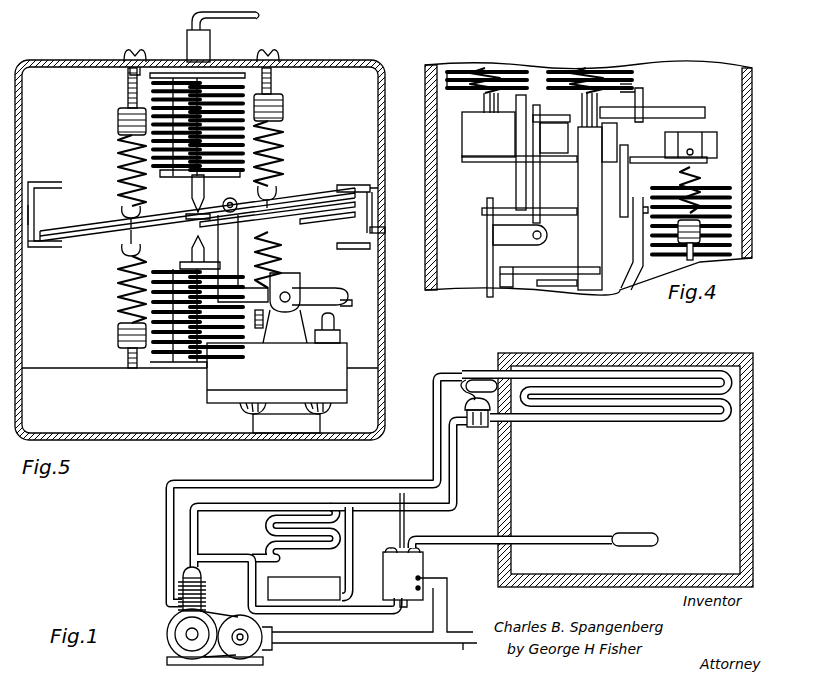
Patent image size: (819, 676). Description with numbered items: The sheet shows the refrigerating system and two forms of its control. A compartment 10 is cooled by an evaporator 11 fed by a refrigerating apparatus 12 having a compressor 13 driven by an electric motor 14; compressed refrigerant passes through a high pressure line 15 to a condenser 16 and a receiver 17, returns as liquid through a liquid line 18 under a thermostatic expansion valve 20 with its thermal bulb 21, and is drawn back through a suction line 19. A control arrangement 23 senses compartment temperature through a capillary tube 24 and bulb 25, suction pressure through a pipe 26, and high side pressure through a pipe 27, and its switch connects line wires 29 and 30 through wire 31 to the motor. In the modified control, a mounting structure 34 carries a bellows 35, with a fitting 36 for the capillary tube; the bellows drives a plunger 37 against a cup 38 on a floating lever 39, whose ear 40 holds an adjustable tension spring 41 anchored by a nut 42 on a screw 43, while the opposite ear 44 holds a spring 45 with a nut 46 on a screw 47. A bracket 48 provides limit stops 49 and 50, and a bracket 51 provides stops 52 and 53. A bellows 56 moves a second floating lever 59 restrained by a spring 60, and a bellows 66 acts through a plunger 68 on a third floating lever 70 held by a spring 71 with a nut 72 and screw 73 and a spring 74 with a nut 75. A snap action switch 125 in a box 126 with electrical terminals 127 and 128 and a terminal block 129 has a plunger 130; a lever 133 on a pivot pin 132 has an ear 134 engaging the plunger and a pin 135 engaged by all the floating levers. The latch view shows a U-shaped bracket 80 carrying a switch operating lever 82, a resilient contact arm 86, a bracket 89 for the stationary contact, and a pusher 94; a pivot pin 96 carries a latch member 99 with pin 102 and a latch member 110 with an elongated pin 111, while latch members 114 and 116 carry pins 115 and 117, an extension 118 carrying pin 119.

In FIG. 1, the compartment 10 is at (590, 357).
In FIG. 1, the evaporator 11 is at (612, 420).
In FIG. 1, the refrigerating apparatus 12 is at (134, 581).
In FIG. 1, the compressor 13 is at (201, 578).
In FIG. 1, the electric motor 14 is at (242, 615).
In FIG. 1, the high pressure line 15 is at (198, 532).
In FIG. 1, the condenser 16 is at (271, 527).
In FIG. 1, the receiver 17 is at (302, 592).
In FIG. 1, the liquid line 18 is at (457, 491).
In FIG. 1, the suction line 19 is at (432, 452).
In FIG. 1, the thermostatic expansion valve 20 is at (478, 427).
In FIG. 1, the thermal bulb 21 is at (474, 378).
In FIG. 1, the control arrangement 23 is at (425, 562).
In FIG. 5, the capillary tube 24 is at (234, 23).
In FIG. 1, the capillary tube 24 is at (482, 536).
In FIG. 1, the bulb 25 is at (630, 533).
In FIG. 1, the pipe 26 is at (399, 533).
In FIG. 1, the pipe 27 is at (362, 614).
In FIG. 1, the line wire 29 is at (460, 632).
In FIG. 1, the line wire 30 is at (374, 657).
In FIG. 1, the wire 31 is at (433, 621).
In FIG. 5, the mounting structure 34 is at (176, 66).
In FIG. 5, the bellows 35 is at (236, 108).
In FIG. 4, the bellows 35 is at (445, 93).
In FIG. 5, the fitting 36 is at (210, 41).
In FIG. 5, the plunger 37 is at (191, 187).
In FIG. 5, the cup 38 is at (190, 214).
In FIG. 5, the floating lever 39 is at (310, 193).
In FIG. 4, the floating lever 39 is at (462, 137).
In FIG. 5, the ear 40 is at (140, 216).
In FIG. 5, the adjustable tension spring 41 is at (119, 170).
In FIG. 5, the nut 42 is at (118, 112).
In FIG. 5, the screw 43 is at (128, 89).
In FIG. 5, the ear 44 is at (280, 194).
In FIG. 5, the adjustable tension spring 45 is at (285, 160).
In FIG. 4, the adjustable tension spring 45 is at (482, 68).
In FIG. 5, the nut 46 is at (284, 116).
In FIG. 5, the screw 47 is at (272, 80).
In FIG. 5, the bracket 48 is at (28, 210).
In FIG. 5, the limit stop 49 is at (36, 248).
In FIG. 5, the limit stop 50 is at (38, 182).
In FIG. 5, the bracket 51 is at (386, 232).
In FIG. 5, the stop 52 is at (348, 252).
In FIG. 5, the stop 53 is at (356, 182).
In FIG. 4, the bellows 56 is at (630, 80).
In FIG. 5, the second floating lever 59 is at (328, 222).
In FIG. 4, the second floating lever 59 is at (611, 132).
In FIG. 4, the spring 60 is at (592, 70).
In FIG. 5, the bellows 66 is at (172, 272).
In FIG. 4, the bellows 66 is at (745, 216).
In FIG. 5, the plunger 68 is at (190, 244).
In FIG. 5, the third floating lever 70 is at (300, 226).
In FIG. 4, the third floating lever 70 is at (717, 142).
In FIG. 5, the adjustable tension spring 71 is at (121, 277).
In FIG. 5, the nut 72 is at (118, 328).
In FIG. 5, the screw 73 is at (128, 358).
In FIG. 5, the adjustable tension spring 74 is at (283, 258).
In FIG. 4, the adjustable tension spring 74 is at (704, 184).
In FIG. 5, the nut 75 is at (253, 326).
In FIG. 4, the U-shaped bracket 80 is at (487, 264).
In FIG. 4, the switch operating lever 82 is at (527, 272).
In FIG. 4, the resilient contact arm 86 is at (549, 264).
In FIG. 4, the bracket 89 is at (493, 237).
In FIG. 4, the pusher 94 is at (596, 242).
In FIG. 4, the pivot pin 96 is at (482, 212).
In FIG. 4, the latch member 99 is at (629, 177).
In FIG. 4, the pin 102 is at (660, 160).
In FIG. 4, the latch member 110 is at (533, 182).
In FIG. 4, the elongated pin 111 is at (480, 163).
In FIG. 4, the latch member 114 is at (554, 138).
In FIG. 4, the pin 115 is at (544, 114).
In FIG. 4, the latch member 116 is at (515, 137).
In FIG. 4, the pin 117 is at (504, 103).
In FIG. 4, the extension 118 is at (644, 95).
In FIG. 4, the pin 119 is at (688, 110).
In FIG. 5, the snap action switch 125 is at (197, 392).
In FIG. 5, the box 126 is at (292, 381).
In FIG. 5, the electrical terminal 127 is at (240, 410).
In FIG. 5, the electrical terminal 128 is at (328, 412).
In FIG. 5, the terminal block 129 is at (300, 431).
In FIG. 5, the plunger 130 is at (336, 325).
In FIG. 5, the pivot pin 132 is at (292, 292).
In FIG. 5, the lever 133 is at (334, 293).
In FIG. 5, the ear 134 is at (360, 303).
In FIG. 5, the pin 135 is at (230, 198).